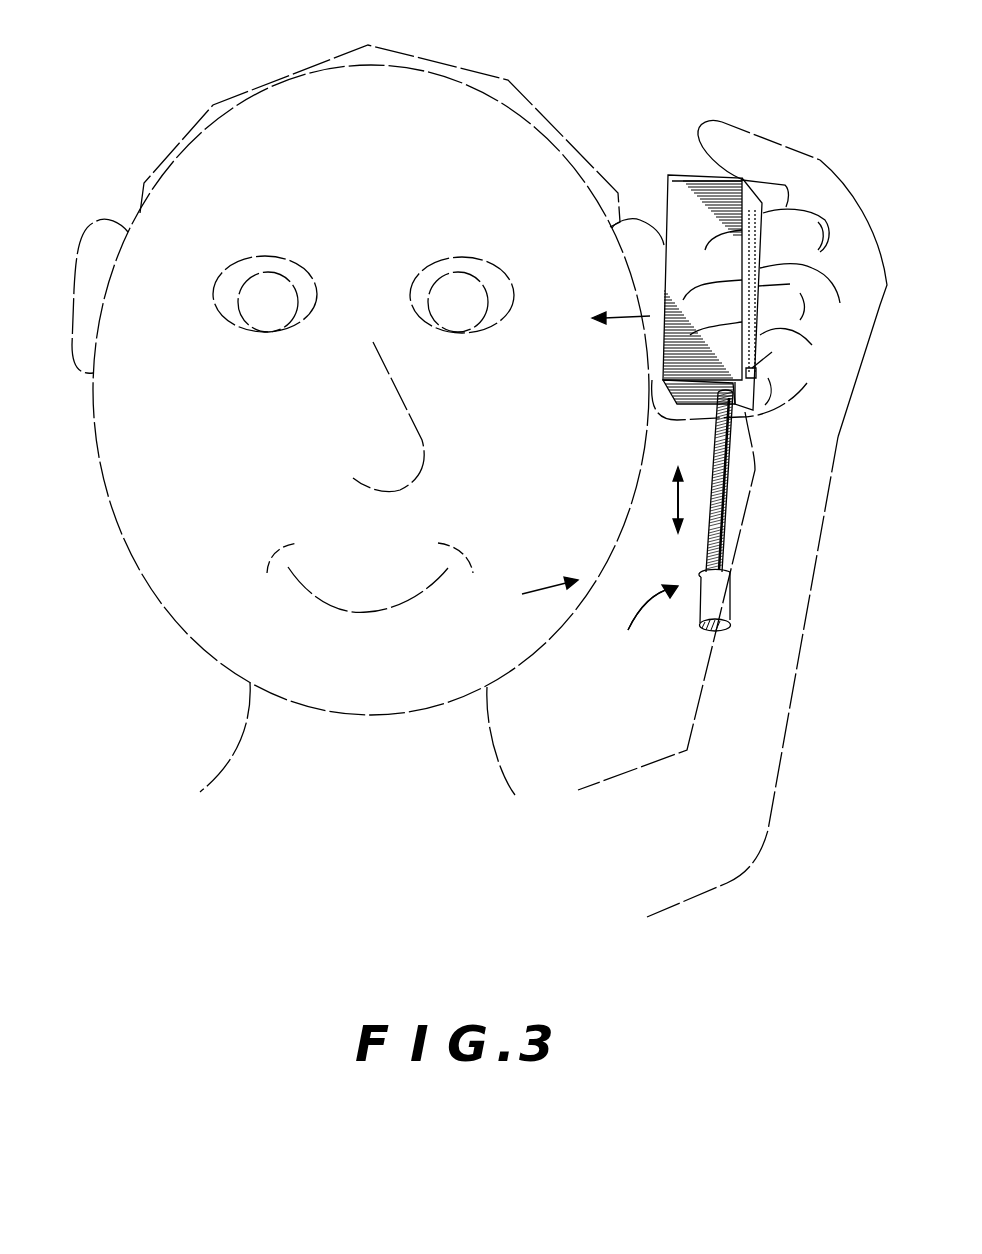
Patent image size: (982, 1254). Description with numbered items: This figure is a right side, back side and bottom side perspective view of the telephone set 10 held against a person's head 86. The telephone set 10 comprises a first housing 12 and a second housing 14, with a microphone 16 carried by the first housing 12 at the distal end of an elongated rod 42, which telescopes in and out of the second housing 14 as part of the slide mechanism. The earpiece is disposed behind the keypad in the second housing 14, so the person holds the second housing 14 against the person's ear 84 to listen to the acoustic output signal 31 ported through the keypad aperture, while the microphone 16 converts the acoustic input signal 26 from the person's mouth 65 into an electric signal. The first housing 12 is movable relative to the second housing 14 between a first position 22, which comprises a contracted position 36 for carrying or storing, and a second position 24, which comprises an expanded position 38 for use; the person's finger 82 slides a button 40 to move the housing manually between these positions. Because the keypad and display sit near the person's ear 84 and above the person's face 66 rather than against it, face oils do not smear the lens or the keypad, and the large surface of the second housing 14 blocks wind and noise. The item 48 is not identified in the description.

The telephone set 10 is at (742, 553).
The first housing 12 is at (635, 623).
The second housing 14 is at (678, 185).
The microphone 16 is at (698, 604).
The first position 22 is at (682, 486).
The second position 24 is at (672, 522).
The acoustic input signal 26 is at (538, 590).
The acoustic output signal 31 is at (620, 317).
The contracted position 36 is at (682, 482).
The expanded position 38 is at (672, 522).
The button 40 is at (748, 372).
The elongated rod 42 is at (632, 625).
The shaft 48 is at (728, 535).
The mouth 65 is at (340, 605).
The face 66 is at (142, 558).
The finger 82 is at (728, 133).
The ear 84 is at (642, 222).
The head 86 is at (543, 148).